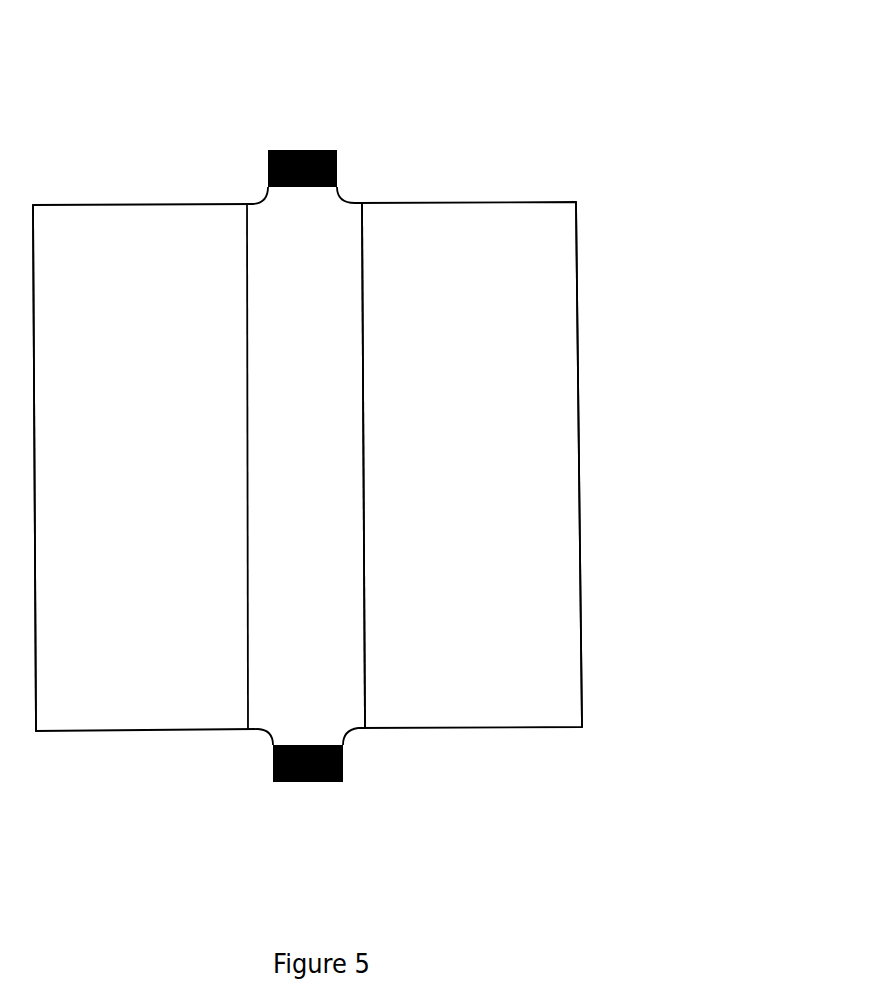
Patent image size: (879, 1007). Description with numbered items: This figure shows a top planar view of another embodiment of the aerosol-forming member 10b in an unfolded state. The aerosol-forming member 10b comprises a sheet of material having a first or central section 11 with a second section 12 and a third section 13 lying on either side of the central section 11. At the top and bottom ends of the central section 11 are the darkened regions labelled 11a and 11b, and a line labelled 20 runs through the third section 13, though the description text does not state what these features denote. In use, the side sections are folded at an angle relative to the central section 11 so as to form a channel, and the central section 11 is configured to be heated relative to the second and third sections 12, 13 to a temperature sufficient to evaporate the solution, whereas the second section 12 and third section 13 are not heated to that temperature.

The aerosol-forming member 10b is at (511, 88).
The first or central section 11 is at (305, 545).
The first electrode terminal 11a is at (246, 236).
The second electrode terminal 11b is at (362, 245).
The second section 12 is at (130, 410).
The third section 13 is at (457, 463).
The interface layer 20 is at (438, 303).